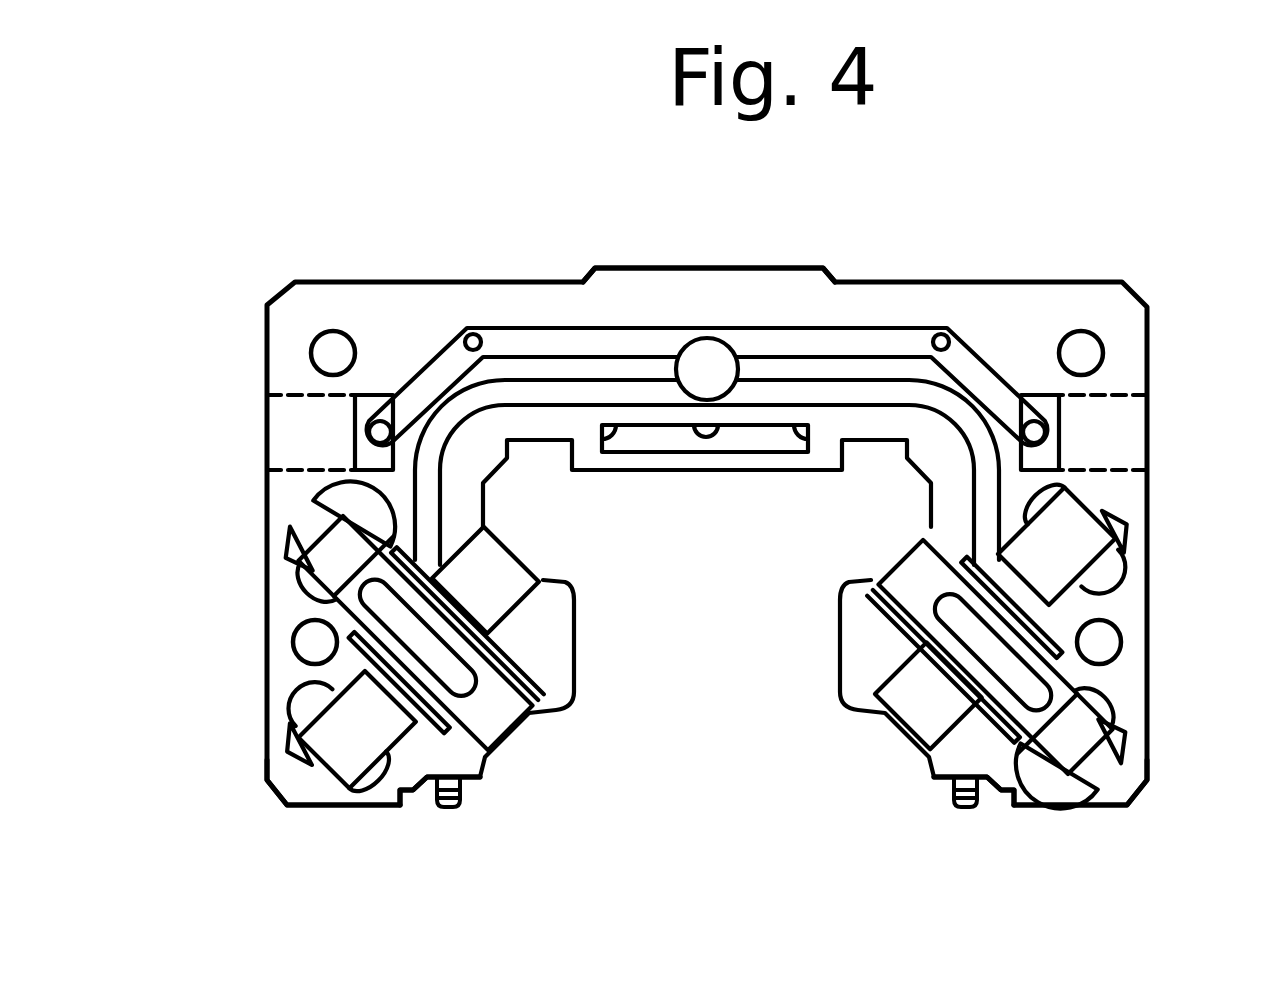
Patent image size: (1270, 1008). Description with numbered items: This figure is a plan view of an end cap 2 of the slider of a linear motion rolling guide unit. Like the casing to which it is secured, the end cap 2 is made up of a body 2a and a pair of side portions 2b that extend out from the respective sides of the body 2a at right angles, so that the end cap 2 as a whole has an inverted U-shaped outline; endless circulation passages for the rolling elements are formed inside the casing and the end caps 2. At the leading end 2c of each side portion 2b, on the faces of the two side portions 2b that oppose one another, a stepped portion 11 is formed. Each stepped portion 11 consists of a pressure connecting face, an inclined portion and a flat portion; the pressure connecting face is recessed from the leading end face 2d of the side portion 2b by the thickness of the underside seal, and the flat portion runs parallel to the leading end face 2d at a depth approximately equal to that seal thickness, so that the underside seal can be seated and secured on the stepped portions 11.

The end cap 2 is at (1131, 270).
The body 2a is at (747, 292).
The side portion 2b is at (282, 640).
The leading end 2c is at (323, 790).
The leading end face 2d is at (350, 808).
The stepped portion 11 is at (417, 790).